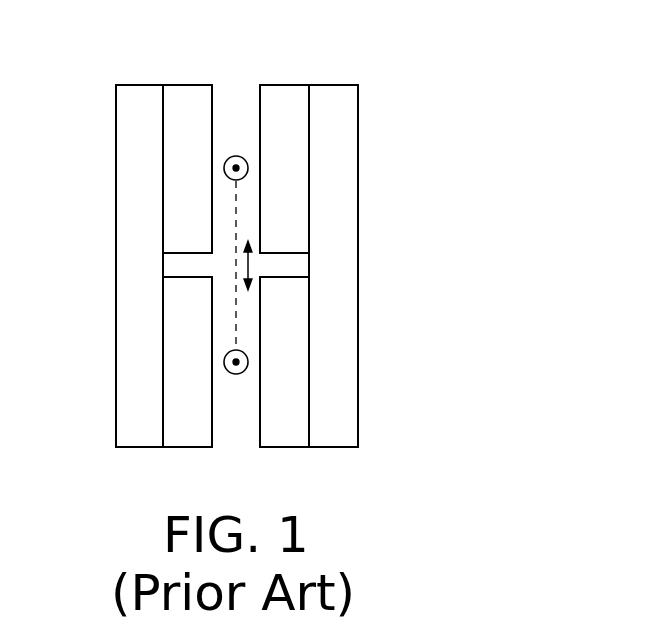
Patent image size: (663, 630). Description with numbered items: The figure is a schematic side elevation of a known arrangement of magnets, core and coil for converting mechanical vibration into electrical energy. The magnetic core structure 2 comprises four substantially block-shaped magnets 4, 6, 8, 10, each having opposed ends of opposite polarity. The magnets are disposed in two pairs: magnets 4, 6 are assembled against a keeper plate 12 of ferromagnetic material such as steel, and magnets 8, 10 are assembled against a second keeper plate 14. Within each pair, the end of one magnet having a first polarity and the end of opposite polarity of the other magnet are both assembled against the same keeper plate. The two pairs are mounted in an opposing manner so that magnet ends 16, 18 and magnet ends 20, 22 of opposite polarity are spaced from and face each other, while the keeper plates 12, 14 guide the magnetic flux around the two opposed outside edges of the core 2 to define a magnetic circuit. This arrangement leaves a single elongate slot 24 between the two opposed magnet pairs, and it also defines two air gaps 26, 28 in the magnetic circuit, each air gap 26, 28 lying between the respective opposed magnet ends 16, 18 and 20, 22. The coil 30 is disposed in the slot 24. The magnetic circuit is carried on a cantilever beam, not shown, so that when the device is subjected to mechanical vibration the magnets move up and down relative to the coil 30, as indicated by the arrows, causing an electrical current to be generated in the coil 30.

The magnetic core structure 2 is at (122, 56).
The magnet 4 is at (177, 98).
The magnet 6 is at (177, 437).
The magnet 8 is at (298, 98).
The magnet 10 is at (297, 437).
The keeper plate 12 is at (130, 437).
The keeper plate 14 is at (347, 437).
The magnet end 16 is at (213, 96).
The magnet end 18 is at (214, 437).
The magnet end 20 is at (258, 96).
The magnet end 22 is at (257, 437).
The elongate slot 24 is at (224, 134).
The air gap 26 is at (178, 264).
The air gap 28 is at (296, 265).
The coil 30 is at (245, 370).